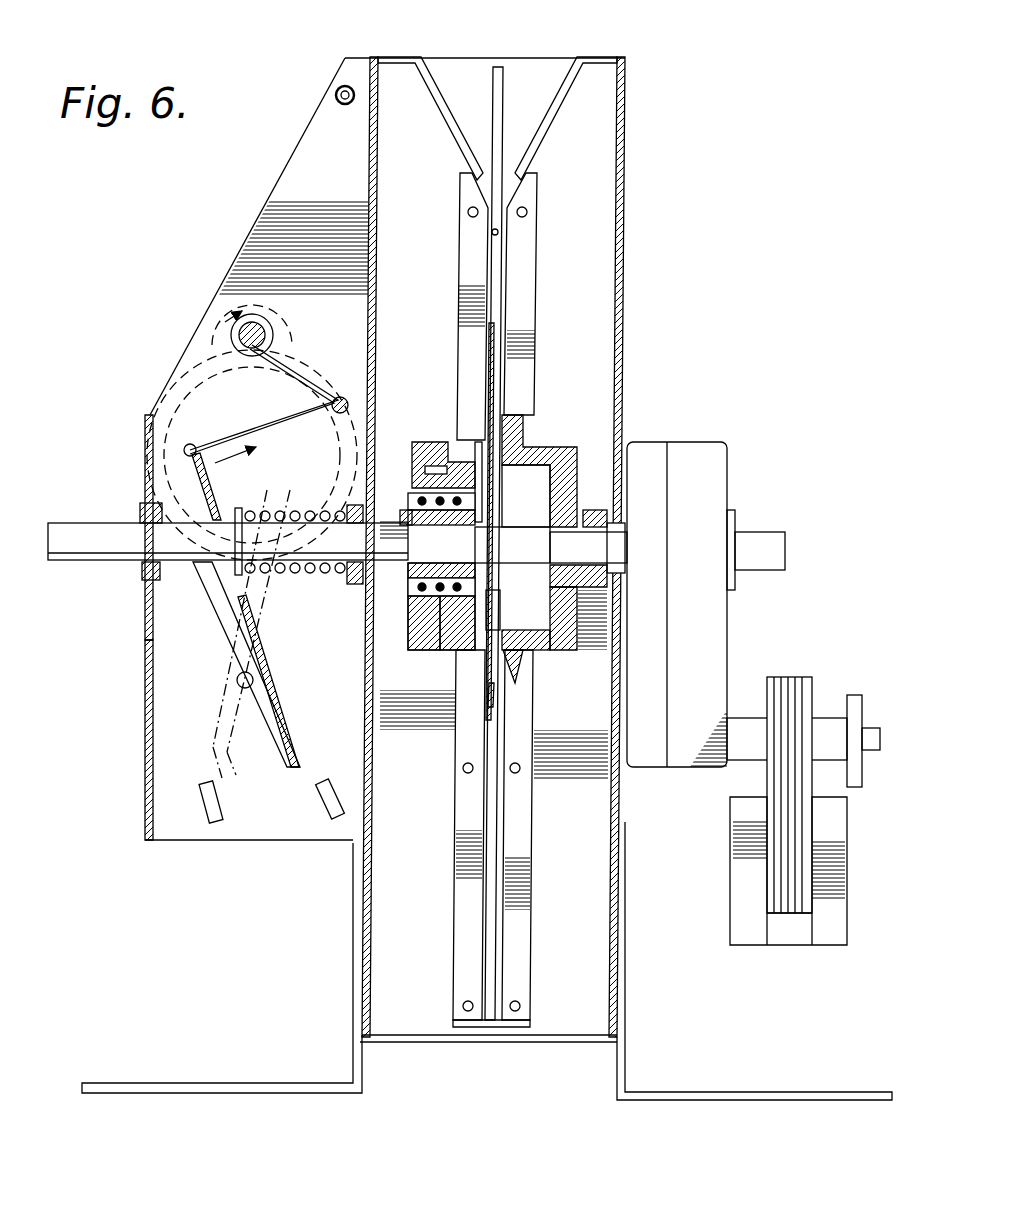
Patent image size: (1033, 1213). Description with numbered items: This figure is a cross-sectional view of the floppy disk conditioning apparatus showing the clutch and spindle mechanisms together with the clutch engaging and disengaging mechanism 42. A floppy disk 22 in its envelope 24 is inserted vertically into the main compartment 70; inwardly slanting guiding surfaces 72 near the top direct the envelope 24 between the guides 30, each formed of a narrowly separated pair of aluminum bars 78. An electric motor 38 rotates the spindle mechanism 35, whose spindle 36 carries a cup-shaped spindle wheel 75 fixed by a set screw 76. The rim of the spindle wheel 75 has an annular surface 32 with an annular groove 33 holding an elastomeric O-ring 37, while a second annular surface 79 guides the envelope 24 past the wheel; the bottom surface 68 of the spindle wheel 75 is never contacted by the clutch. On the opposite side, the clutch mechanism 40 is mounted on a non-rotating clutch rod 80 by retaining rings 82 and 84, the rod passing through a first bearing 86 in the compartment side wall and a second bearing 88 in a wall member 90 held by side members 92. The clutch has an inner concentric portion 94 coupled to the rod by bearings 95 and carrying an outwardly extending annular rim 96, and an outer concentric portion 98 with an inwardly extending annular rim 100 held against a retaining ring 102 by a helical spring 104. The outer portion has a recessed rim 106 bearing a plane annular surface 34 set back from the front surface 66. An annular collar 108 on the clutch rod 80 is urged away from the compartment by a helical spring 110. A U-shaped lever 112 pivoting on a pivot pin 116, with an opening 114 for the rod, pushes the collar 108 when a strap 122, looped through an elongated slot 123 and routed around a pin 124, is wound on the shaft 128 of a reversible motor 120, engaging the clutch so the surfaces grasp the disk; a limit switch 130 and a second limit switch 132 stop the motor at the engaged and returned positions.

The floppy disk 22 is at (503, 345).
The envelope 24 is at (497, 258).
The guides 30 is at (495, 232).
The annular surface 32 is at (498, 630).
The annular groove 33 is at (525, 640).
The annular surface 34 is at (450, 444).
The spindle mechanism 35 is at (572, 445).
The spindle 36 is at (600, 545).
The O-ring 37 is at (520, 672).
The electric motor 38 is at (712, 462).
The clutch mechanism 40 is at (407, 657).
The clutch engaging and disengaging mechanism 42 is at (203, 612).
The front surface 66 is at (565, 585).
The bottom surface 68 is at (600, 440).
The main compartment 70 is at (628, 115).
The guiding surfaces 72 is at (572, 62).
The spindle wheel 75 is at (572, 627).
The set screw 76 is at (607, 515).
The aluminum bars 78 is at (527, 982).
The second annular surface 79 is at (496, 700).
The clutch rod 80 is at (60, 523).
The retaining ring 82 is at (500, 538).
The retaining ring 84 is at (406, 510).
The first bearing 86 is at (396, 520).
The second bearing 88 is at (142, 572).
The wall member 90 is at (150, 712).
The side members 92 is at (150, 797).
The inner concentric portion 94 is at (405, 578).
The bearings 95 is at (425, 525).
The outwardly extending annular rim 96 is at (405, 600).
The outer concentric portion 98 is at (410, 640).
The inwardly extending annular rim 100 is at (460, 655).
The retaining ring 102 is at (480, 490).
The helical spring 104 is at (414, 650).
The recessed rim 106 is at (430, 466).
The annular collar 108 is at (235, 469).
The helical spring 110 is at (318, 578).
The lever 112 is at (265, 640).
The opening 114 is at (205, 498).
The pivot pin 116 is at (237, 680).
The reversible motor 120 is at (207, 382).
The strap 122 is at (240, 427).
The elongated slot 123 is at (185, 455).
The pin 124 is at (332, 405).
The shaft 128 is at (245, 335).
The limit switch 130 is at (212, 825).
The second limit switch 132 is at (335, 820).